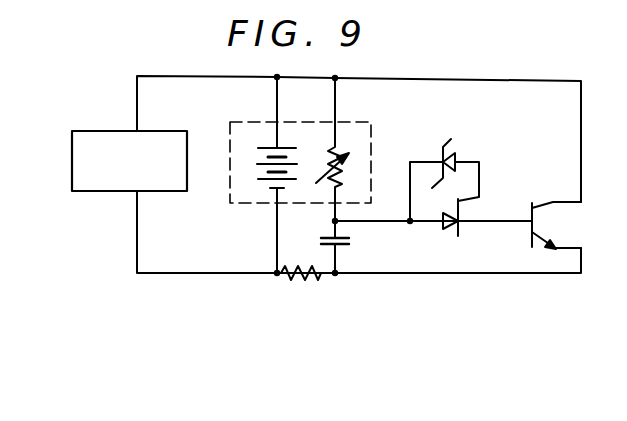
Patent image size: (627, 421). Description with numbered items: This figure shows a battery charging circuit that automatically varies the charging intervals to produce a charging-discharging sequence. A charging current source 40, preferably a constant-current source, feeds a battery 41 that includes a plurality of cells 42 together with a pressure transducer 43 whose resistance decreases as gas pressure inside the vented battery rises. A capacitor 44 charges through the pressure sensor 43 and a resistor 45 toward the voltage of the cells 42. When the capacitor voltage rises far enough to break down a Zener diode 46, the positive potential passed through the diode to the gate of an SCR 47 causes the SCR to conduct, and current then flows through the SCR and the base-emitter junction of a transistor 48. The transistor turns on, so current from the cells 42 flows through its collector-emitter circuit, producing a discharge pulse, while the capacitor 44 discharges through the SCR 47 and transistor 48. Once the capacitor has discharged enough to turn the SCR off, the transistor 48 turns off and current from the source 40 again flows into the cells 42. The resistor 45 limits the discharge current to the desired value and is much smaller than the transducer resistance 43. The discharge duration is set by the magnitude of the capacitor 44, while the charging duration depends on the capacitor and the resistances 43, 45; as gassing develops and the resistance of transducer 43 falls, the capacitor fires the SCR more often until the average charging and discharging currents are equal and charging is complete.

The charging current source 40 is at (107, 130).
The battery 41 is at (349, 121).
The cells 42 is at (258, 178).
The pressure transducer 43 is at (351, 163).
The capacitor 44 is at (351, 237).
The resistor 45 is at (313, 281).
The Zener diode 46 is at (458, 156).
The SCR 47 is at (456, 233).
The transistor 48 is at (545, 204).